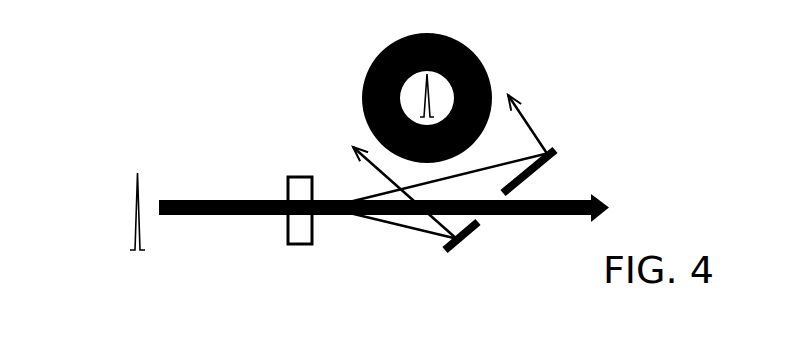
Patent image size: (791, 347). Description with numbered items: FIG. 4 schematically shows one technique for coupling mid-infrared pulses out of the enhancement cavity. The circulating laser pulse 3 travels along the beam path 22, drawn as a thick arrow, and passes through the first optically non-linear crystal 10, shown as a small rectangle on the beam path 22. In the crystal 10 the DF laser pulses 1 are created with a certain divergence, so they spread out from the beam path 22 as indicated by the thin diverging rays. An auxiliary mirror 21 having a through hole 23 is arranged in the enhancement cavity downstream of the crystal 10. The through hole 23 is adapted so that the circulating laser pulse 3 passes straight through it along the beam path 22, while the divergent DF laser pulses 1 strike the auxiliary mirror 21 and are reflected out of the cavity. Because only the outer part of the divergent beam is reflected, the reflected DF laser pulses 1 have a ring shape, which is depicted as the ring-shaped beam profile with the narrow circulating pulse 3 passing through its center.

The DF laser pulses 1 is at (353, 102).
The circulating laser pulse 3 is at (133, 208).
The first optically non-linear crystal 10 is at (287, 182).
The auxiliary mirror 21 is at (463, 243).
The beam path 22 is at (203, 200).
The through hole 23 is at (493, 215).